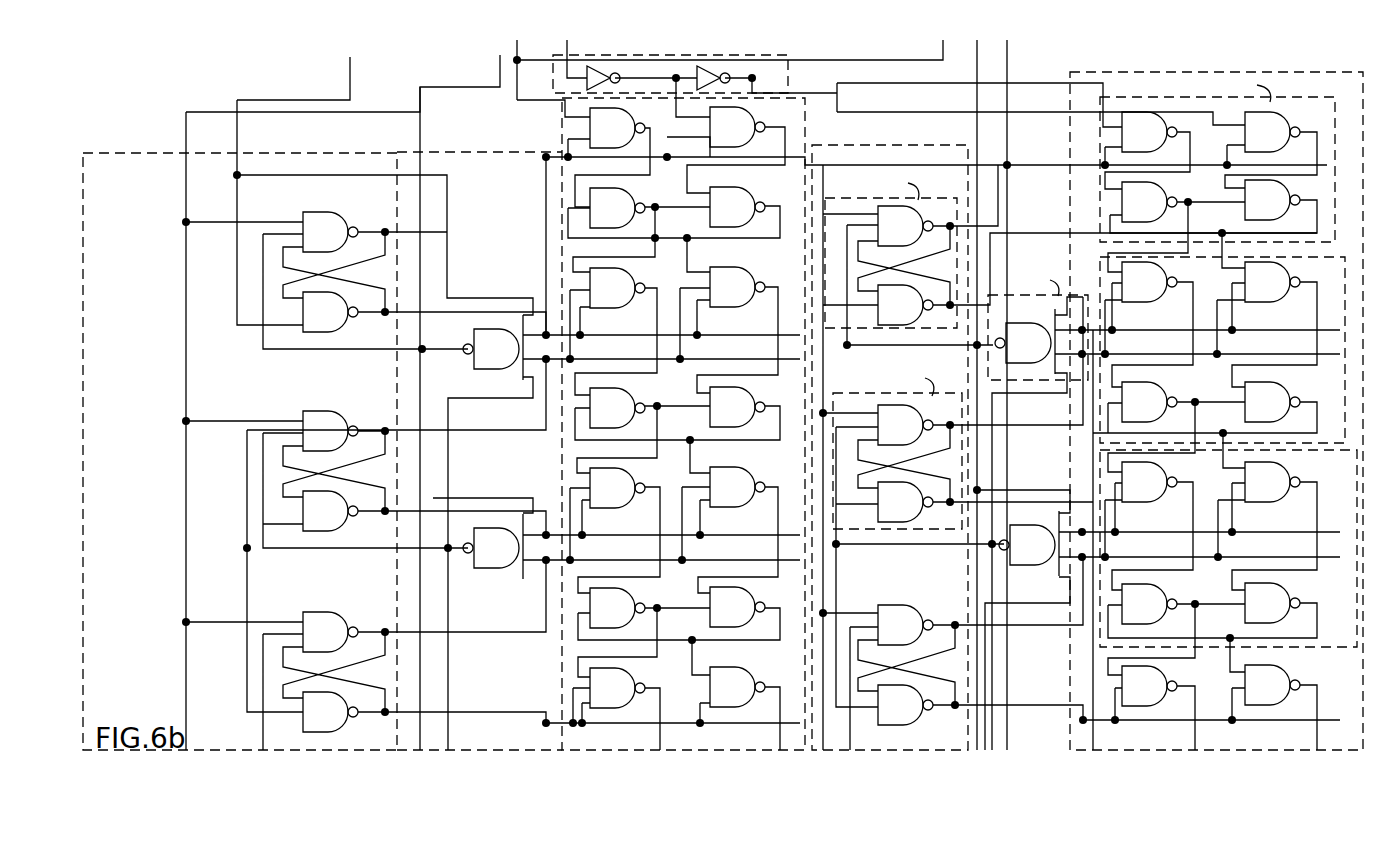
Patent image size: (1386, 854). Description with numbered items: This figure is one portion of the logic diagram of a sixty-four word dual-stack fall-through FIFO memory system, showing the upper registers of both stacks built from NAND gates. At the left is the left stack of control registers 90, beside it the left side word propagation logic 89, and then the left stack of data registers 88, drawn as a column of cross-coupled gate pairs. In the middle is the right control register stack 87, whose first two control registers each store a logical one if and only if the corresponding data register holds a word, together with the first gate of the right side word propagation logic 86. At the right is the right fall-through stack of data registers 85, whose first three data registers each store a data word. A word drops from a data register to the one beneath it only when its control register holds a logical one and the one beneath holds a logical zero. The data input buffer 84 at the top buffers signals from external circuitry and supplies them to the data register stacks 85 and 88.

The data input buffer 84 is at (783, 68).
The right fall-through stack of data registers 85 is at (1217, 411).
The right side word propagation logic 86 is at (1088, 395).
The right control register stack 87 is at (1076, 447).
The left stack of data registers 88 is at (675, 414).
The left side word propagation logic 89 is at (782, 395).
The left stack of control registers 90 is at (314, 402).